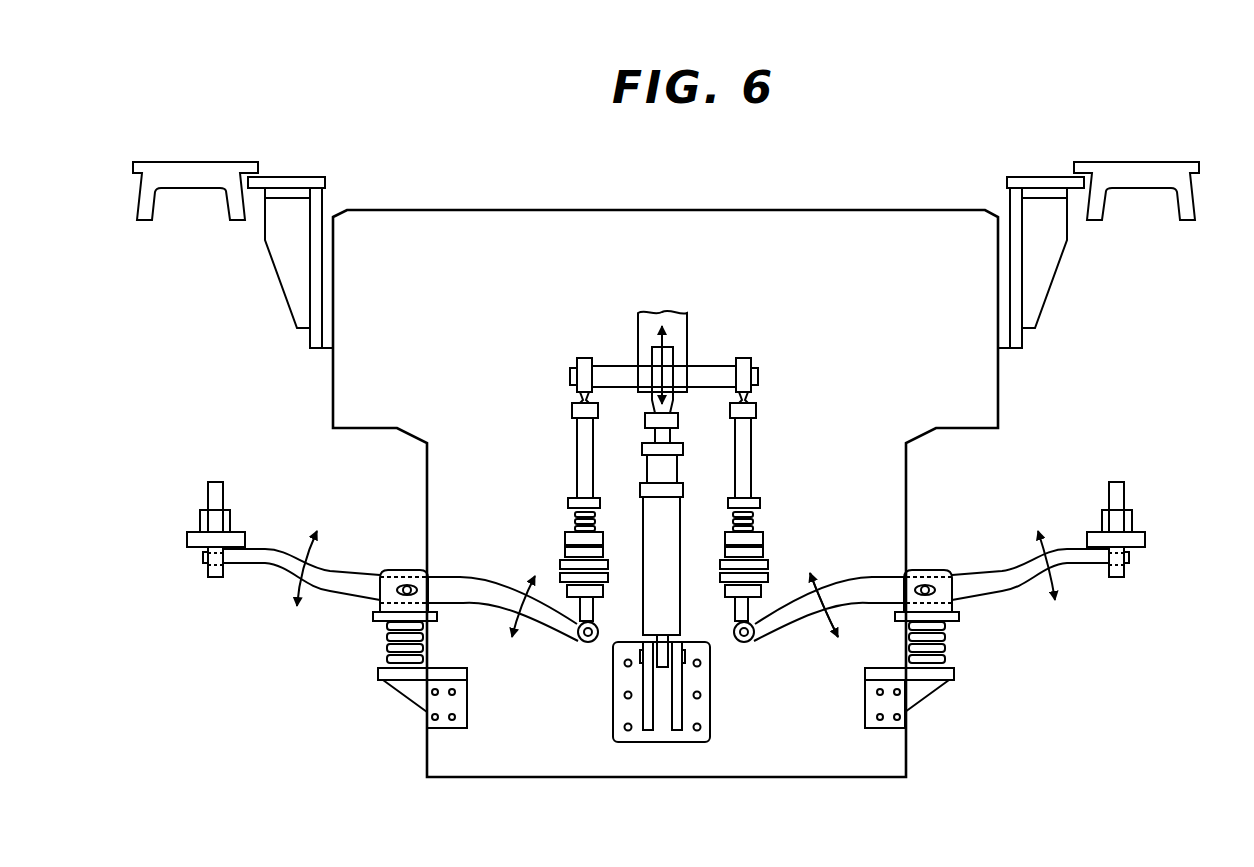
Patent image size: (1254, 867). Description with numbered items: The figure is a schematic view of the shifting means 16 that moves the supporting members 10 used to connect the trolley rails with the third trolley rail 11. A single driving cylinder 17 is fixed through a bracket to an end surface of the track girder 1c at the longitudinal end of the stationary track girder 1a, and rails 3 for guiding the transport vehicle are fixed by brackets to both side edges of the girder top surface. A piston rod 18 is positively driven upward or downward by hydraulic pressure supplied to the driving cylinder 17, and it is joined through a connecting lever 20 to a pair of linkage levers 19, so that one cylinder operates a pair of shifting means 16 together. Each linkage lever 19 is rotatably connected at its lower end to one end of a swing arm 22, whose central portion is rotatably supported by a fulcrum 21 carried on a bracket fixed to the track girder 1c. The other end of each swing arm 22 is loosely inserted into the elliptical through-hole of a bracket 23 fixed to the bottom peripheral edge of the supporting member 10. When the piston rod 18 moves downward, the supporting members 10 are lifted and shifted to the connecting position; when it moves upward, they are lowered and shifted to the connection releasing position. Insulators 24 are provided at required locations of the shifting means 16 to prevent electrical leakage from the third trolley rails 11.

The stationary track girder 1a is at (882, 204).
The track girder 1c is at (741, 226).
The rails 3 is at (228, 178).
The supporting member 10 is at (200, 520).
The third trolley rail 11 is at (208, 495).
The shifting means 16 is at (847, 554).
The driving cylinder 17 is at (673, 595).
The piston rod 18 is at (665, 440).
The linkage levers 19 is at (587, 442).
The connecting lever 20 is at (715, 372).
The fulcrum 21 is at (407, 585).
The swing arm 22 is at (275, 570).
The bracket 23 is at (220, 577).
The insulators 24 is at (563, 557).